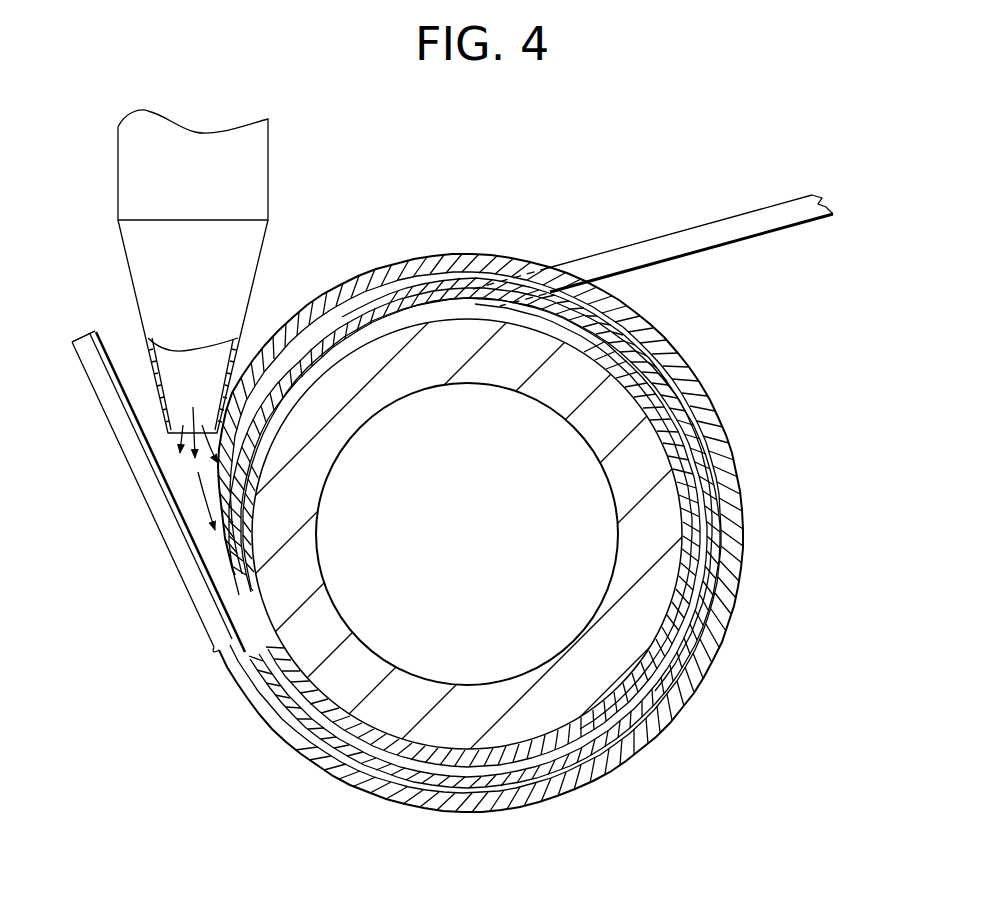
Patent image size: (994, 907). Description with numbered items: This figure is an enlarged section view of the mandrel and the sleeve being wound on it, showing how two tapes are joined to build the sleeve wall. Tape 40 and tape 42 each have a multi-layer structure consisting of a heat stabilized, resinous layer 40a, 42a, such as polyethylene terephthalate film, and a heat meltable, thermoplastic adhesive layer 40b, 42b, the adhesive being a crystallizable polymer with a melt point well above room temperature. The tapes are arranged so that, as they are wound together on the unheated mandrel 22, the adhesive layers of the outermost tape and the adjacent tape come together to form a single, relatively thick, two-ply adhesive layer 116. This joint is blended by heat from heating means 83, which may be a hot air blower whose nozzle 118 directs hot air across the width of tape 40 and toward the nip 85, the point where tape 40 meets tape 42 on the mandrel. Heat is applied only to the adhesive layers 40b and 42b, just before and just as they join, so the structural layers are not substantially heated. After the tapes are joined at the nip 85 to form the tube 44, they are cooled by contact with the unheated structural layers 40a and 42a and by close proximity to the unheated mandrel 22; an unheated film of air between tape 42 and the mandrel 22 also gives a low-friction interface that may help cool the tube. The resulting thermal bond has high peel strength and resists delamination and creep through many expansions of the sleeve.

The mandrel 22 is at (663, 500).
The tube 44 is at (662, 740).
The tape 40 is at (127, 502).
The resinous layer 40a is at (100, 383).
The adhesive layer 40b is at (128, 343).
The tape 42 is at (703, 260).
The resinous layer 42a is at (787, 225).
The adhesive layer 42b is at (787, 205).
The heating means 83 is at (262, 183).
The nip 85 is at (197, 513).
The two-ply adhesive layer 116 is at (402, 775).
The nozzle 118 is at (240, 350).